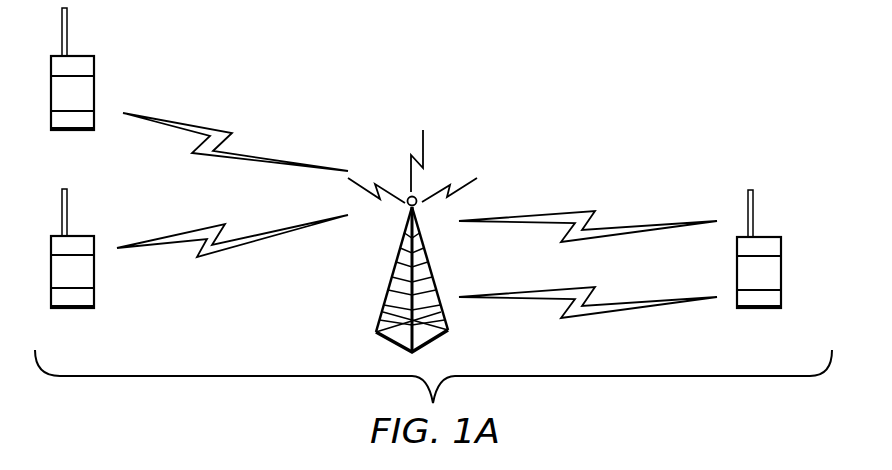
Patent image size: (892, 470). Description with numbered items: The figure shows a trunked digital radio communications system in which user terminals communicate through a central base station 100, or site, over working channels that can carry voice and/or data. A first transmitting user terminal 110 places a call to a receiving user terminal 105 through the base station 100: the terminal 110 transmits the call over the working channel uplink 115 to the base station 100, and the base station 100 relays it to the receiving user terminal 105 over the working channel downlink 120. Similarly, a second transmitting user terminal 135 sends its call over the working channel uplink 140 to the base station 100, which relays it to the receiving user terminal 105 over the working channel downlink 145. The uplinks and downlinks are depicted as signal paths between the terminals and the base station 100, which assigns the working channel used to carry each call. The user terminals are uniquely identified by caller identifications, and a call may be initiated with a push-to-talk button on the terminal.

The base station 100 is at (415, 196).
The receiving user terminal 105 is at (758, 237).
The first transmitting user terminal 110 is at (82, 237).
The working channel uplink 115 is at (238, 150).
The working channel downlink 120 is at (615, 228).
The second transmitting user terminal 135 is at (95, 57).
The working channel uplink 140 is at (240, 245).
The working channel downlink 145 is at (618, 310).